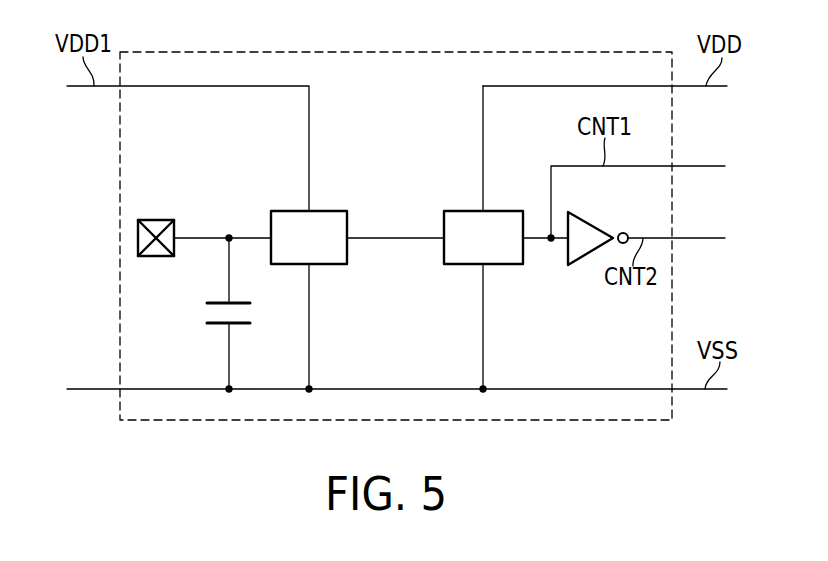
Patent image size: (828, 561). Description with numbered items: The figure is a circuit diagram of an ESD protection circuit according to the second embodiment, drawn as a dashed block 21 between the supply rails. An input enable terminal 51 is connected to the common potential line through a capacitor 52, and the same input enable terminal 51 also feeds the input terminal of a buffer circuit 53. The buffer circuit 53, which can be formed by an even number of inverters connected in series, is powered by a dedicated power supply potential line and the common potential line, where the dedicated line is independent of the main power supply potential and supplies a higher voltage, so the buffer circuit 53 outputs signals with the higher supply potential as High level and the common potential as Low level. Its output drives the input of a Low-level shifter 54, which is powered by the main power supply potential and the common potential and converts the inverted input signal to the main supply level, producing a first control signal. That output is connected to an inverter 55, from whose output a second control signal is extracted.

The power-on reset circuit 21 is at (453, 52).
The input enable terminal 51 is at (156, 220).
The capacitor 52 is at (200, 314).
The buffer circuit 53 is at (329, 264).
The Low-level shifter 54 is at (504, 264).
The inverter 55 is at (597, 222).